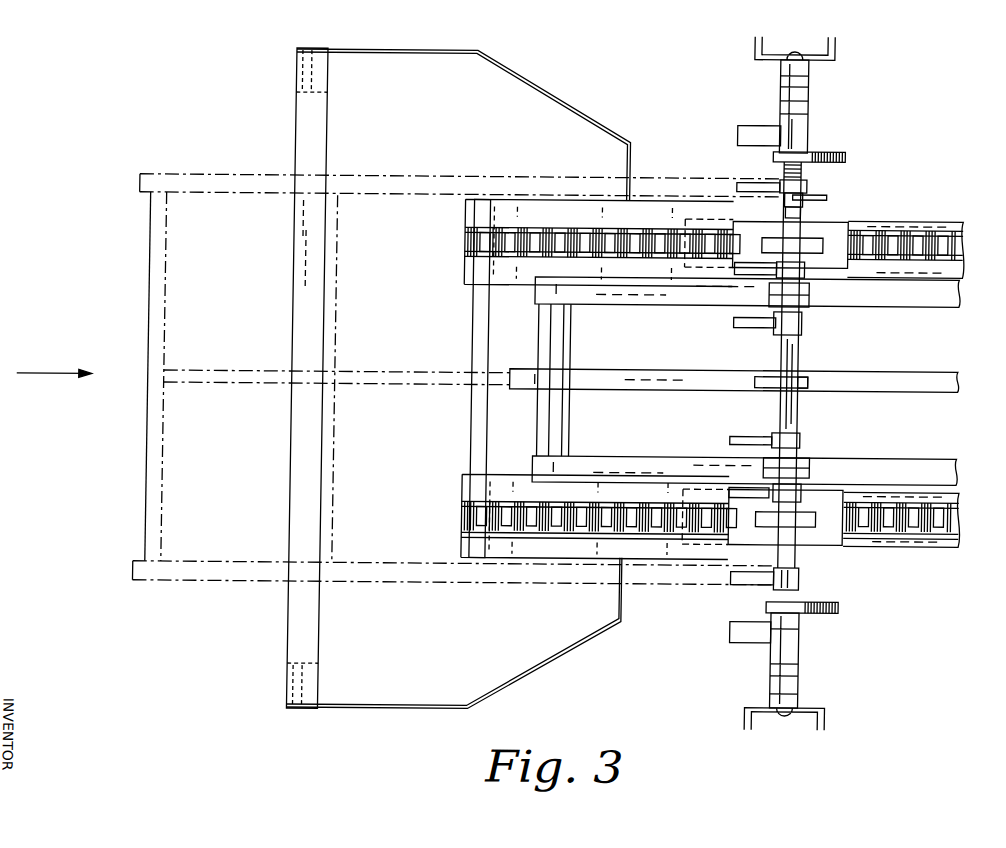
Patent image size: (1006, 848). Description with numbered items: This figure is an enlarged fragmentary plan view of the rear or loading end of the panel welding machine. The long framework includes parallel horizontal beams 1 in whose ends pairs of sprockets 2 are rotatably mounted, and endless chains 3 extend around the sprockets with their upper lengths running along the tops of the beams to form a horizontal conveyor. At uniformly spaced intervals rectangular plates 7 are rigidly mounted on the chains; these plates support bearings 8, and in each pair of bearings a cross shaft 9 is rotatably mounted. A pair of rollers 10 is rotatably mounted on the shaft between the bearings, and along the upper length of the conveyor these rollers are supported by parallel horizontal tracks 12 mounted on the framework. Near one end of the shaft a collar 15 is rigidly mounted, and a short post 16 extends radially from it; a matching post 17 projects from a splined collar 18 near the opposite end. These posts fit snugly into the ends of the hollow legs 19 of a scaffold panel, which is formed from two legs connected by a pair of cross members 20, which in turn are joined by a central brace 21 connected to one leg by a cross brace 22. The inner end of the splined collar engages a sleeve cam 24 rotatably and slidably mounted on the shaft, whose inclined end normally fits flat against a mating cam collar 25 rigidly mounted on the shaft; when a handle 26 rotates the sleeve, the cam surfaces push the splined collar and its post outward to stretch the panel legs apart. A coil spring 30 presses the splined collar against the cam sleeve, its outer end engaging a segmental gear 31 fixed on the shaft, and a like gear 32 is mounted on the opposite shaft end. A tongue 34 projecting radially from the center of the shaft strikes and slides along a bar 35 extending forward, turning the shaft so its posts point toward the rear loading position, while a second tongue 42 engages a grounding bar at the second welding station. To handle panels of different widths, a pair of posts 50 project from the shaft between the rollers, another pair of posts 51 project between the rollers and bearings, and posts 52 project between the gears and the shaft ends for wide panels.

The horizontal beams 1 is at (958, 251).
The sprockets 2 is at (600, 236).
The endless chains 3 is at (888, 231).
The rectangular plates 7 is at (826, 227).
The bearings 8 is at (814, 252).
The cross shaft 9 is at (790, 370).
The rollers 10 is at (812, 300).
The horizontal tracks 12 is at (884, 294).
The collar 15 is at (800, 576).
The post 16 is at (740, 582).
The post 17 is at (748, 186).
The splined collar 18 is at (808, 186).
The hollow legs 19 is at (243, 176).
The cross members 20 is at (153, 460).
The central brace 21 is at (233, 384).
The cross brace 22 is at (340, 276).
The sleeve cam 24 is at (787, 196).
The cam collar 25 is at (788, 210).
The handle 26 is at (829, 195).
The coil spring 30 is at (784, 174).
The segmental gear 31 is at (820, 153).
The segmental gear 32 is at (810, 610).
The tongue 34 is at (760, 385).
The bar 35 is at (669, 385).
The second tongue 42 is at (810, 386).
The posts 50 is at (753, 324).
The posts 51 is at (752, 271).
The posts 52 is at (755, 128).